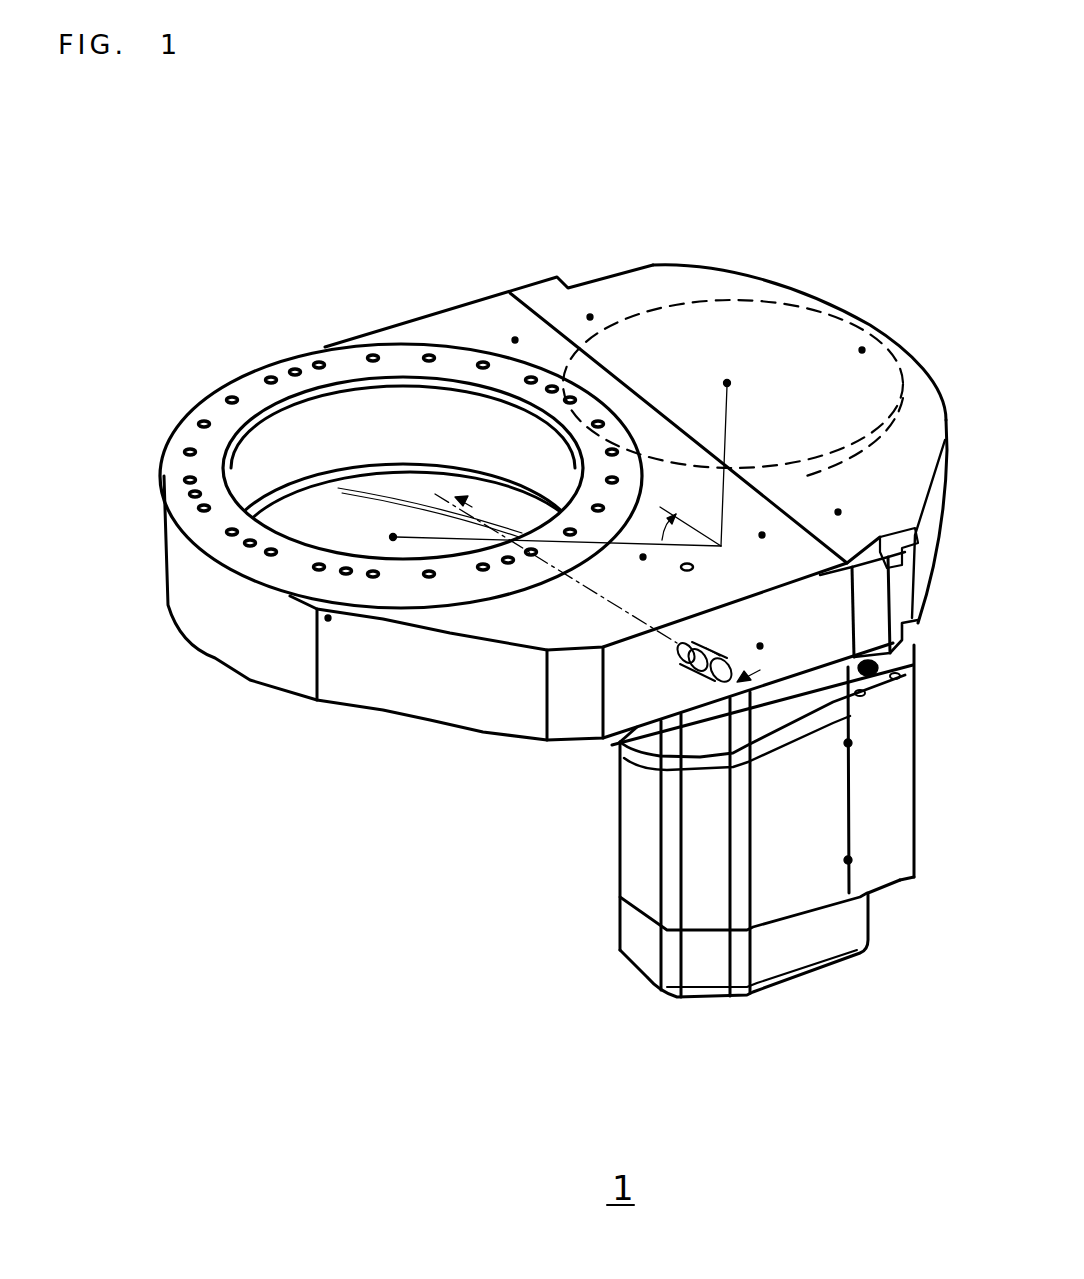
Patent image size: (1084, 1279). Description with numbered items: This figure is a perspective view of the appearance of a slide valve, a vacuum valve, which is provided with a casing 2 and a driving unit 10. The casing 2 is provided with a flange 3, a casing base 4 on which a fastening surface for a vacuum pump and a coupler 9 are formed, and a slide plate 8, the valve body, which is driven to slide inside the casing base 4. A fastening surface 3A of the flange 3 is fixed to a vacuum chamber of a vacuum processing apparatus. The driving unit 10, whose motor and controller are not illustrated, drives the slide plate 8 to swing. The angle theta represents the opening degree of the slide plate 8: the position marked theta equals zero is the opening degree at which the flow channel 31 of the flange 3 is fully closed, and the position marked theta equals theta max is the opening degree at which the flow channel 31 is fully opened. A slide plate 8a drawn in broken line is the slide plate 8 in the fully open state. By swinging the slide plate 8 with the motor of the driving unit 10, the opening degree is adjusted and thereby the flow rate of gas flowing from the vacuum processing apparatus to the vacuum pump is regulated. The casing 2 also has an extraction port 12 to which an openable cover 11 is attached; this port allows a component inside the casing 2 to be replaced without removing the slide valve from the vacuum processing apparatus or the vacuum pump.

The casing 2 is at (775, 278).
The flange 3 is at (400, 363).
The fastening surface 3A is at (487, 378).
The casing base 4 is at (497, 308).
The slide plate 8 is at (400, 500).
The slide plate 8a is at (698, 307).
The coupler 9 is at (700, 672).
The driving unit 10 is at (707, 862).
The openable cover 11 is at (630, 297).
The extraction port 12 is at (547, 310).
The flow channel 31 is at (267, 460).